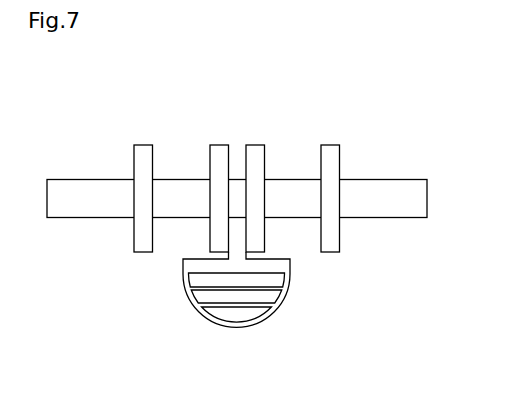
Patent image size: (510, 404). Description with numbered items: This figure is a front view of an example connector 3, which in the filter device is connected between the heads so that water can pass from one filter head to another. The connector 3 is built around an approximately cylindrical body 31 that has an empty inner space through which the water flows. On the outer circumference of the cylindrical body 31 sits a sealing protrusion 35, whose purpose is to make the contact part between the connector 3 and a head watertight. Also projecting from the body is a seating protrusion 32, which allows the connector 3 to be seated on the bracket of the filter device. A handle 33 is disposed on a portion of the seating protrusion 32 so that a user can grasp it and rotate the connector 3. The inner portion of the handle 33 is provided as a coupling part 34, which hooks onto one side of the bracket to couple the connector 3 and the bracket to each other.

The connector 3 is at (298, 137).
The cylindrical body 31 is at (72, 210).
The seating protrusion 32 is at (217, 165).
The handle 33 is at (235, 323).
The coupling part 34 is at (277, 258).
The sealing protrusion 35 is at (140, 252).